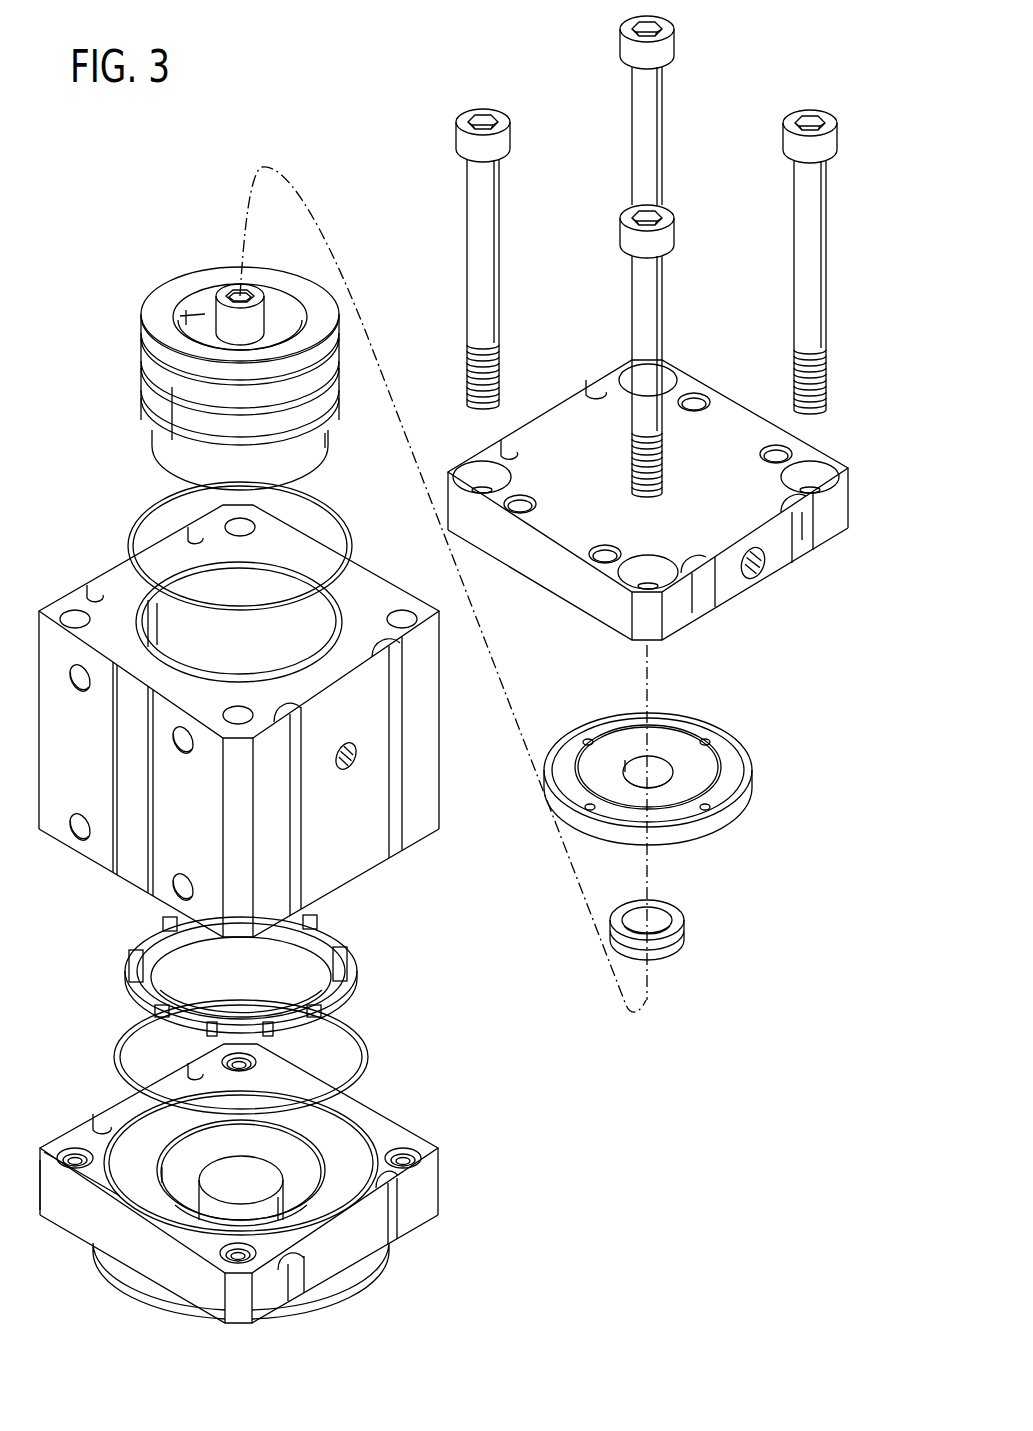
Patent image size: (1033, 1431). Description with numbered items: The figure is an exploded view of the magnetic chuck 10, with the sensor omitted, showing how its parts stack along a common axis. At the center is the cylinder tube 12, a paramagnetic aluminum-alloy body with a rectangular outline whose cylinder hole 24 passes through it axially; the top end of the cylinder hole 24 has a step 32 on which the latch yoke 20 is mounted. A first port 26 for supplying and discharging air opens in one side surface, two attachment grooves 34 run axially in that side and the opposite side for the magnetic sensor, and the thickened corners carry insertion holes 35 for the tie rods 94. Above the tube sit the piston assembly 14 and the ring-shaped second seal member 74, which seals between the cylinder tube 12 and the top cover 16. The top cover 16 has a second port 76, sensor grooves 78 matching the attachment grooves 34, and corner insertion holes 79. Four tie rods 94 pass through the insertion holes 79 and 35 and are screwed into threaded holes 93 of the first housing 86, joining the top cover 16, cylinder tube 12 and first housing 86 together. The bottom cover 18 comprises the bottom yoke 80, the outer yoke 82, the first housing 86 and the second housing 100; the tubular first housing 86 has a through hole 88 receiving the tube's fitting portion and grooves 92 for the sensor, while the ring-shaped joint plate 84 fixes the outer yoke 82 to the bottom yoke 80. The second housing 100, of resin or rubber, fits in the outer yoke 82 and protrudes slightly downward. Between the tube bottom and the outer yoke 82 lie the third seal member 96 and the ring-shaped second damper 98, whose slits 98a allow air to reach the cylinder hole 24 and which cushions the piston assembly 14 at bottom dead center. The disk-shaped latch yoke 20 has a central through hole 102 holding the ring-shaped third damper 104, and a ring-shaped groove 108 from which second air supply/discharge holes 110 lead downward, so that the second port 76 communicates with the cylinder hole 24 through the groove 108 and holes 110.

The magnetic chuck 10 is at (435, 84).
The cylinder tube 12 is at (269, 721).
The piston assembly 14 is at (160, 275).
The top cover 16 is at (650, 506).
The bottom cover 18 is at (252, 1190).
The latch yoke 20 is at (679, 784).
The cylinder hole 24 is at (274, 585).
The first port 26 is at (346, 771).
The step 32 is at (330, 613).
The attachment grooves 34 is at (404, 812).
The insertion holes 35 is at (402, 610).
The second seal member 74 is at (330, 508).
The second port 76 is at (757, 580).
The grooves 78 is at (807, 537).
The insertion holes 79 is at (814, 477).
The bottom yoke 80 is at (233, 1192).
The outer yoke 82 is at (354, 1165).
The joint plate 84 is at (300, 1198).
The first housing 86 is at (72, 1219).
The through hole 88 is at (136, 1129).
The grooves 92 is at (390, 1225).
The threaded holes 93 is at (406, 1150).
The tie rods 94 is at (474, 189).
The third seal member 96 is at (354, 1026).
The second damper 98 is at (264, 965).
The slits 98a is at (129, 950).
The second housing 100 is at (118, 1268).
The central through hole 102 is at (661, 781).
The third damper 104 is at (686, 920).
The ring-shaped groove 108 is at (726, 770).
The second air supply/discharge holes 110 is at (705, 739).